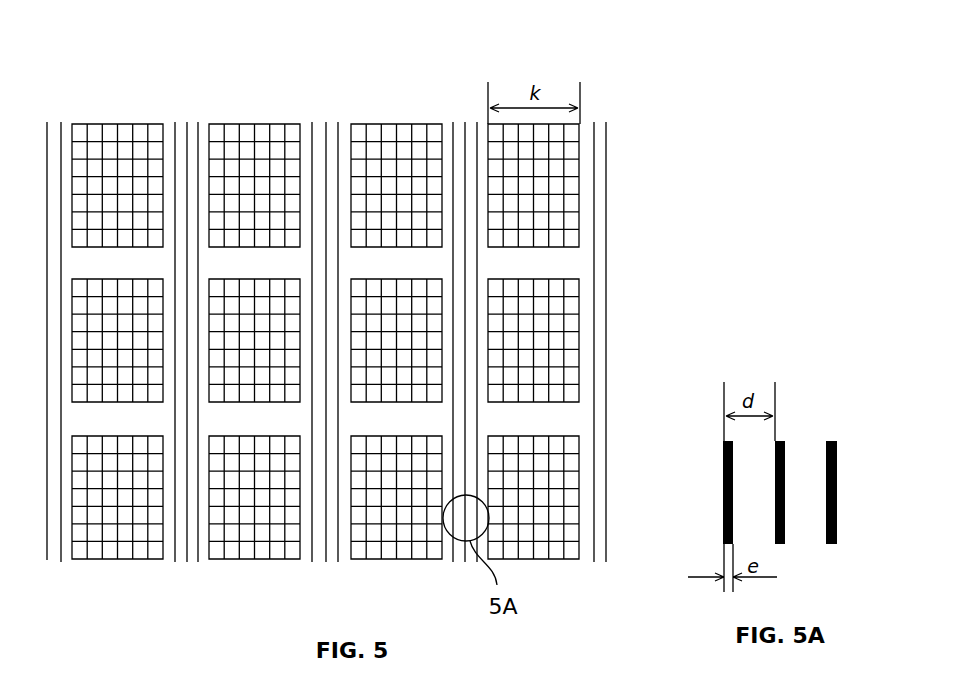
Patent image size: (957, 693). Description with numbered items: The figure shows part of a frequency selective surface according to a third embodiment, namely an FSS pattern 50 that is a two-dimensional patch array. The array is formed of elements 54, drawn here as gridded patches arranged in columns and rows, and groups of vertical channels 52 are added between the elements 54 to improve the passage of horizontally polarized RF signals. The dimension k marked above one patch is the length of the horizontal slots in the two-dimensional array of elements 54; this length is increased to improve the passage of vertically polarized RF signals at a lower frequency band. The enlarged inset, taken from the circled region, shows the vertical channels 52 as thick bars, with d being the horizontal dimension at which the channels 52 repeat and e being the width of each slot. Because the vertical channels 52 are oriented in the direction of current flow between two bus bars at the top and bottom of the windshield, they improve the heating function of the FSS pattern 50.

In FIG. 5, the FSS pattern 50 is at (380, 308).
In FIG. 5, the vertical channels 52 is at (466, 118).
In FIG. 5A, the vertical channels 52 is at (832, 440).
In FIG. 5, the elements 54 is at (109, 114).